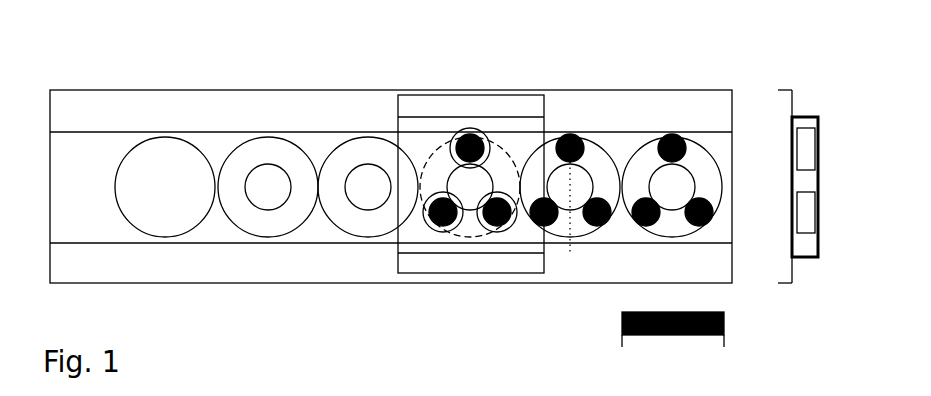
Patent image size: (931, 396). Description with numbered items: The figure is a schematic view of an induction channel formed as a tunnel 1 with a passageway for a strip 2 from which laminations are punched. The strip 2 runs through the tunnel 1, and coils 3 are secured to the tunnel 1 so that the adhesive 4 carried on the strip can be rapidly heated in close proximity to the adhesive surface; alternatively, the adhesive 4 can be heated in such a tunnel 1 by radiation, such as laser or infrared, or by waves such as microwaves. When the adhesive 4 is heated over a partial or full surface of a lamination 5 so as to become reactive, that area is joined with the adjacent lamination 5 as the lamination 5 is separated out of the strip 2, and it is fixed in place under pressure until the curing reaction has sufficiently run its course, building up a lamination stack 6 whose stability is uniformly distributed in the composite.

The tunnel 1 is at (415, 108).
The strip 2 is at (80, 162).
The coils 3 is at (487, 142).
The adhesive 4 is at (570, 137).
The lamination 5 is at (598, 165).
The lamination stack 6 is at (695, 345).